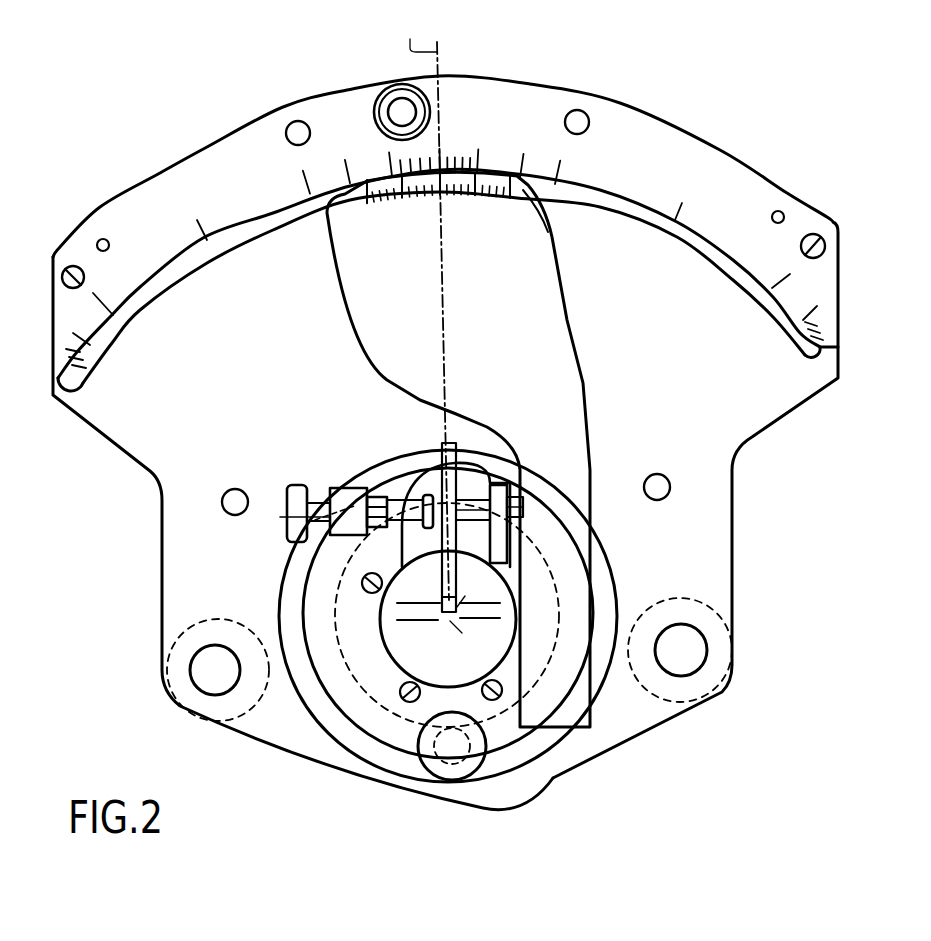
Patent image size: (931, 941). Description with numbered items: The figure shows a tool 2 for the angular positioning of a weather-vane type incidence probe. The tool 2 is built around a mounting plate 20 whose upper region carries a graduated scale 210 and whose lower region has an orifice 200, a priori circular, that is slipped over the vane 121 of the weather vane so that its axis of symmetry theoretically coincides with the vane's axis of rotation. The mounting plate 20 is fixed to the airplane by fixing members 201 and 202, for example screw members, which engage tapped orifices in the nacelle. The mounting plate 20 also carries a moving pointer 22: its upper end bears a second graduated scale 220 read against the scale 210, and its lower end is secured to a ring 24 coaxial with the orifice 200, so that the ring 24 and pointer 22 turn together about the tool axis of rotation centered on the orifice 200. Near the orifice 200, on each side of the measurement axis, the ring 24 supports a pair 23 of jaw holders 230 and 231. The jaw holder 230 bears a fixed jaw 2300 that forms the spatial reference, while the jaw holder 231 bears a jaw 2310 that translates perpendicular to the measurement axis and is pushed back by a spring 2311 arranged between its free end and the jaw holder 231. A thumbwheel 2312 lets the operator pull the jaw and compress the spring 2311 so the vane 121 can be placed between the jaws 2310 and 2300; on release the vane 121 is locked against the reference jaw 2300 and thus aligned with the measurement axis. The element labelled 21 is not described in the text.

The tool 2 is at (146, 605).
The mounting plate 20 is at (118, 427).
The dial / fixing element 21 is at (288, 122).
The moving pointer 22 is at (360, 271).
The pair of jaw holders 23 is at (405, 481).
The ring 24 is at (500, 737).
The vane 121 is at (447, 442).
The orifice 200 is at (387, 612).
The fixing member 201 is at (179, 712).
The fixing member 202 is at (713, 633).
The graduated scale 210 is at (497, 157).
The graduated scale 220 is at (553, 237).
The jaw holder 230 is at (592, 561).
The jaw holder 231 is at (338, 468).
The fixed jaw 2300 is at (505, 453).
The movable jaw 2310 is at (427, 492).
The spring 2311 is at (398, 487).
The thumbwheel 2312 is at (284, 500).